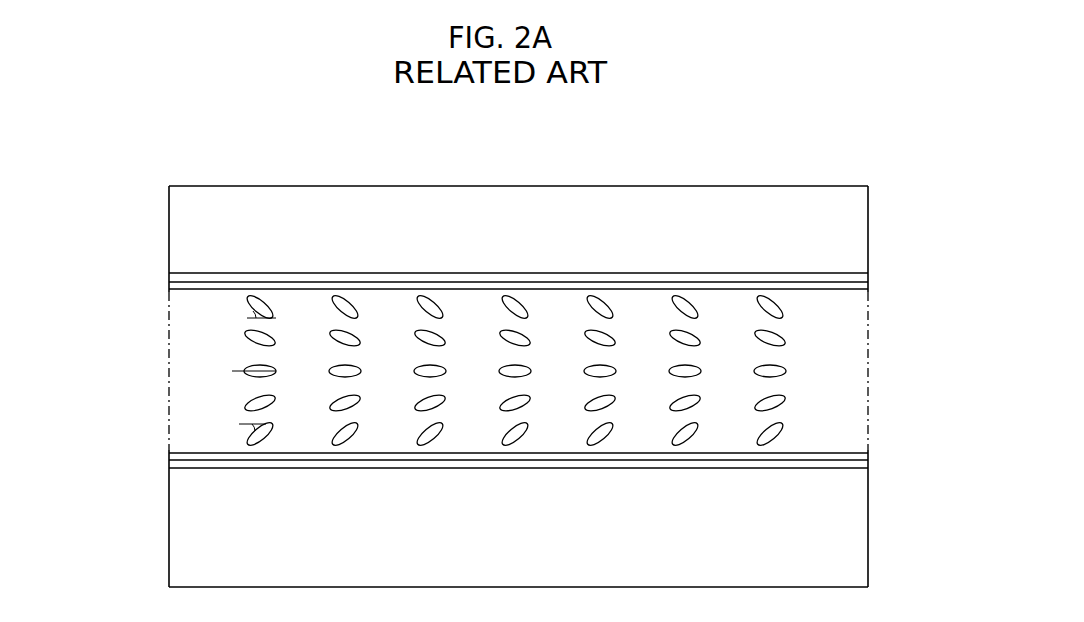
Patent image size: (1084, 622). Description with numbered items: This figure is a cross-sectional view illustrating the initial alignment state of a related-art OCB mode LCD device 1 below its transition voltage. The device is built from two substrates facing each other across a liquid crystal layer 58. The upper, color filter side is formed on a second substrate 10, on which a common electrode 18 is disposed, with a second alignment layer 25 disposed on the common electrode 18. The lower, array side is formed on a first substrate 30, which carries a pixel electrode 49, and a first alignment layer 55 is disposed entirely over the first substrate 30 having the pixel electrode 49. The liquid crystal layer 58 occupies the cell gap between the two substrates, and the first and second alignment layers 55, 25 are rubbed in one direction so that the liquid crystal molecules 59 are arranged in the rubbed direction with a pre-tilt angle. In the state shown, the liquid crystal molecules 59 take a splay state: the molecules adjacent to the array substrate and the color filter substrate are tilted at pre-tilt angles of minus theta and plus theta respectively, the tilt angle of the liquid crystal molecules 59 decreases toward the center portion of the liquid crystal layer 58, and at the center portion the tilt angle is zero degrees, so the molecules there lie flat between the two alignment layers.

The OCB mode LCD device 1 is at (857, 152).
The second substrate 10 is at (832, 236).
The first substrate 30 is at (832, 566).
The common electrode 18 is at (635, 273).
The second alignment layer 25 is at (695, 288).
The pixel electrode 49 is at (478, 463).
The first alignment layer 55 is at (588, 455).
The liquid crystal layer 58 is at (180, 389).
The liquid crystal molecules 59 is at (255, 337).